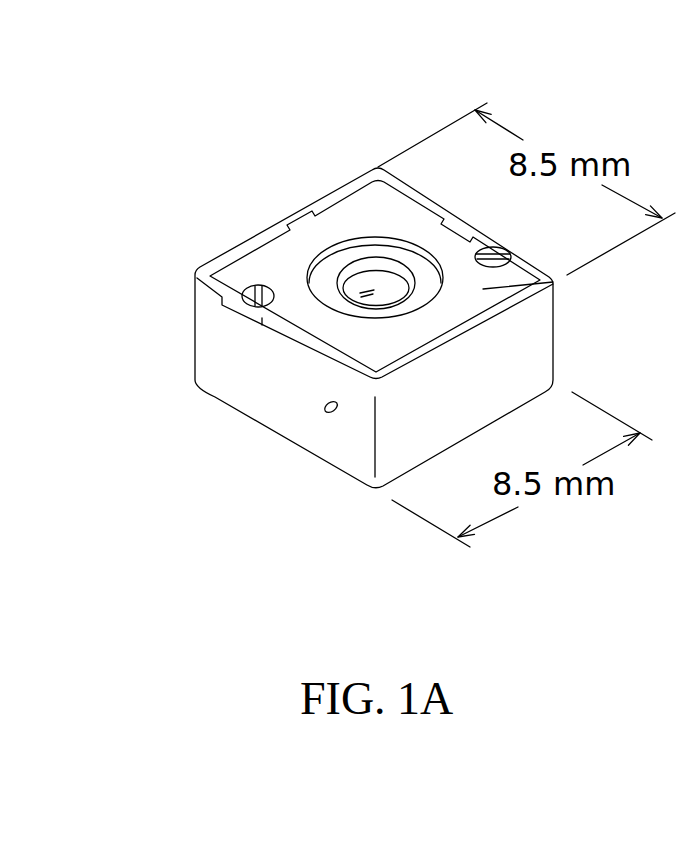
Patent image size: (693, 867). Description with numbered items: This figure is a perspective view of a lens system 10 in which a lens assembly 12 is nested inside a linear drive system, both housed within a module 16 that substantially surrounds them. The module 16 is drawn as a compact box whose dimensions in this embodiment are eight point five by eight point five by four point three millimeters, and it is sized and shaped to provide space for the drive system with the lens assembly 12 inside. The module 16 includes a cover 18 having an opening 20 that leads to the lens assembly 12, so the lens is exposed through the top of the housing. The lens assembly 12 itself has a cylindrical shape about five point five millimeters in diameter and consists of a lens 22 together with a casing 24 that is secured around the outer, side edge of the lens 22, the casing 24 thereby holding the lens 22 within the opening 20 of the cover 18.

The lens system 10 is at (260, 168).
The lens assembly 12 is at (378, 246).
The module 16 is at (282, 436).
The cover 18 is at (553, 282).
The opening 20 is at (379, 318).
The lens 22 is at (363, 283).
The casing 24 is at (355, 308).